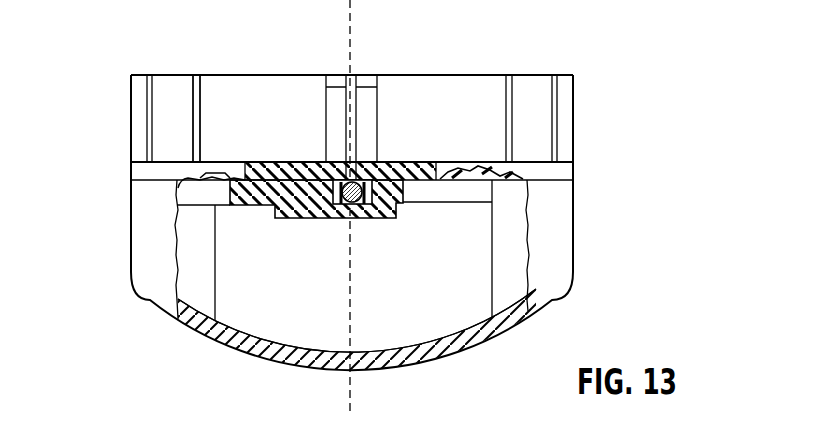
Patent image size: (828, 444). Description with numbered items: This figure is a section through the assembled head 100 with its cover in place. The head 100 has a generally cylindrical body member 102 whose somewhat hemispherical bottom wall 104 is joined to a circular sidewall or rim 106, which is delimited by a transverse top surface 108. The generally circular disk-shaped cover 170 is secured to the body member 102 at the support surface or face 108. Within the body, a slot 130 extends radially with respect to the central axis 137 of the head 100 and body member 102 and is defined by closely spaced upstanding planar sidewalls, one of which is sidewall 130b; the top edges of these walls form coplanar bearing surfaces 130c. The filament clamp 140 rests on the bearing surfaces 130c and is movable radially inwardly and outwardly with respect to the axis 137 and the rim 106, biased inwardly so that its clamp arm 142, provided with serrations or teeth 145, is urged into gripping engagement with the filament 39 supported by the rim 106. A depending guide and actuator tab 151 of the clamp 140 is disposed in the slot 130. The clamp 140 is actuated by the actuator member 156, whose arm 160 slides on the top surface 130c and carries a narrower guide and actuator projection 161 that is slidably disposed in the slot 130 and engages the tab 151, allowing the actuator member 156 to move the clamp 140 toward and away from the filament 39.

The filament 39 is at (343, 183).
The head 100 is at (113, 154).
The body member 102 is at (122, 257).
The bottom wall 104 is at (205, 337).
The rim 106 is at (575, 221).
The top surface 108 is at (558, 178).
The slot 130 is at (298, 309).
The sidewall 130b is at (453, 210).
The bearing surface 130c is at (230, 204).
The central axis 137 is at (349, 272).
The filament clamp 140 is at (442, 167).
The clamp arm 142 is at (394, 183).
The serrations 145 is at (374, 185).
The guide and actuator tab 151 is at (382, 212).
The actuator member 156 is at (253, 165).
The arm 160 is at (346, 185).
The guide and actuator projection 161 is at (362, 210).
The cover 170 is at (554, 57).